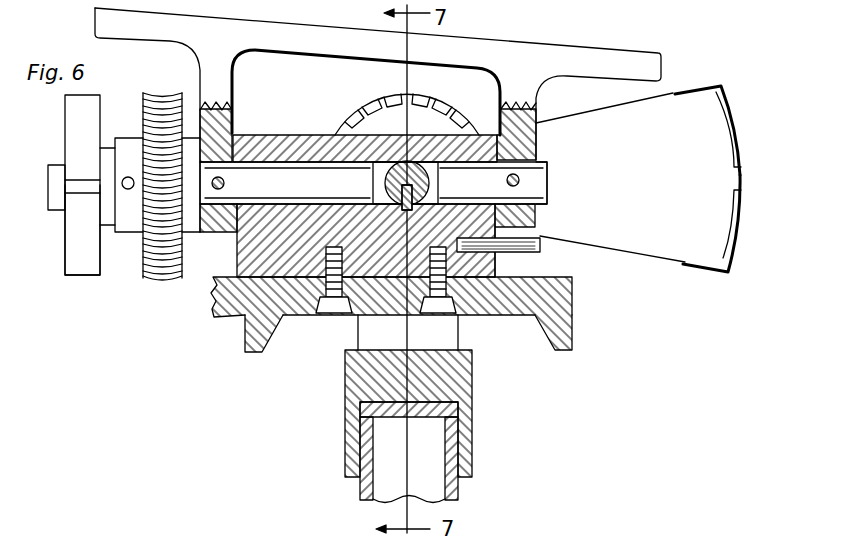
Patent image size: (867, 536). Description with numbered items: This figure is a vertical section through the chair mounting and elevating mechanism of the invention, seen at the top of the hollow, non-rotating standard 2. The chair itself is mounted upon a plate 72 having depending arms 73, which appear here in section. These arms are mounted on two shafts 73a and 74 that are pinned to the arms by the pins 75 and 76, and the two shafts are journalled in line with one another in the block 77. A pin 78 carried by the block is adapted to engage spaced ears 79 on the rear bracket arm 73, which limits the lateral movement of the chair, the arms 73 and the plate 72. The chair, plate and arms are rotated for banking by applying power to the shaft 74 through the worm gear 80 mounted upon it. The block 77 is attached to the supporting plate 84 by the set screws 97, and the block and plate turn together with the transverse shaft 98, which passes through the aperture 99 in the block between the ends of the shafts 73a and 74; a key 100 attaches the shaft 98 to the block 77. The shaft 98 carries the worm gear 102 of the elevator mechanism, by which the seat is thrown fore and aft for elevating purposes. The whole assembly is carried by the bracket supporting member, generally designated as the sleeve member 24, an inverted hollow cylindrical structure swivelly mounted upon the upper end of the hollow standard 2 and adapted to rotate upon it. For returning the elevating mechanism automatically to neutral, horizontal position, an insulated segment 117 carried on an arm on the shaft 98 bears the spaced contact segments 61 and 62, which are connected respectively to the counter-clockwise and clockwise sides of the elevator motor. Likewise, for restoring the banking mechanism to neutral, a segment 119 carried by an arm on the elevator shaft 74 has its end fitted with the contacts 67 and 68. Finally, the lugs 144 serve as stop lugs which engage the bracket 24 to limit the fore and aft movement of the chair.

The non-rotating standard 2 is at (462, 488).
The sleeve member 24 is at (473, 403).
The contact segment 61 is at (740, 222).
The contact segment 62 is at (742, 122).
The contact 67 is at (82, 230).
The contact 68 is at (90, 185).
The plate 72 is at (353, 50).
The depending arms 73 is at (539, 94).
The shaft 73a is at (538, 172).
The shaft 74 is at (47, 176).
The pin 75 is at (537, 165).
The pin 76 is at (226, 183).
The block 77 is at (326, 133).
The pin 78 is at (541, 235).
The spaced ears 79 is at (528, 258).
The worm gear 80 is at (170, 275).
The supporting plate 84 is at (562, 293).
The set screws 97 is at (335, 315).
The transverse shaft 98 is at (385, 178).
The aperture 99 is at (433, 170).
The key 100 is at (413, 195).
The worm gear 102 is at (428, 96).
The insulated segment 117 is at (624, 177).
The segment 119 is at (68, 133).
The stop lugs 144 is at (250, 352).